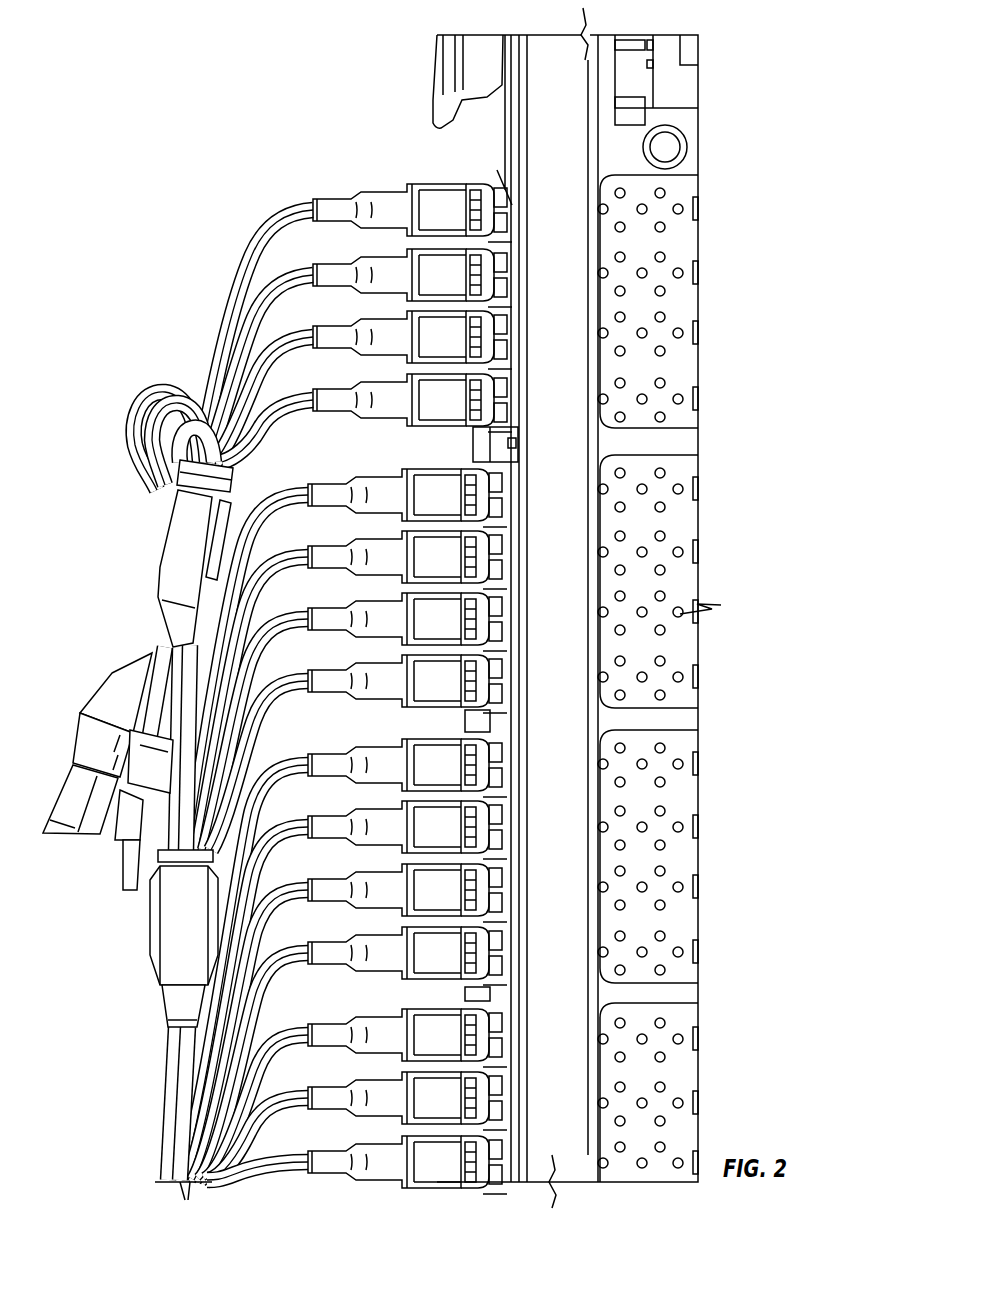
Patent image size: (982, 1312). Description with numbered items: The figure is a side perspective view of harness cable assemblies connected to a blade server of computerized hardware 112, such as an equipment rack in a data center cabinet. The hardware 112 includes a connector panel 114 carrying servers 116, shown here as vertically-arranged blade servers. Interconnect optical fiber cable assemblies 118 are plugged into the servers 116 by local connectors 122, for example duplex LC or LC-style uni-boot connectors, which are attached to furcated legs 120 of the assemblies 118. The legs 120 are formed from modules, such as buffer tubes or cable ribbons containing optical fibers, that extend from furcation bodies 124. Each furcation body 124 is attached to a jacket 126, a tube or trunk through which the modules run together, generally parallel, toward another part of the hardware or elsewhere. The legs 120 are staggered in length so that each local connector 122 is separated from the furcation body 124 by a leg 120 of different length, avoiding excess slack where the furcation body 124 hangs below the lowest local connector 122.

The computerized hardware 112 is at (621, 607).
The connector panel 114 is at (506, 152).
The servers 116 is at (673, 255).
The interconnect optical fiber cable assemblies 118 is at (160, 795).
The furcated legs 120 is at (250, 241).
The local connectors 122 is at (432, 197).
The furcation bodies 124 is at (178, 548).
The jackets 126 is at (130, 662).